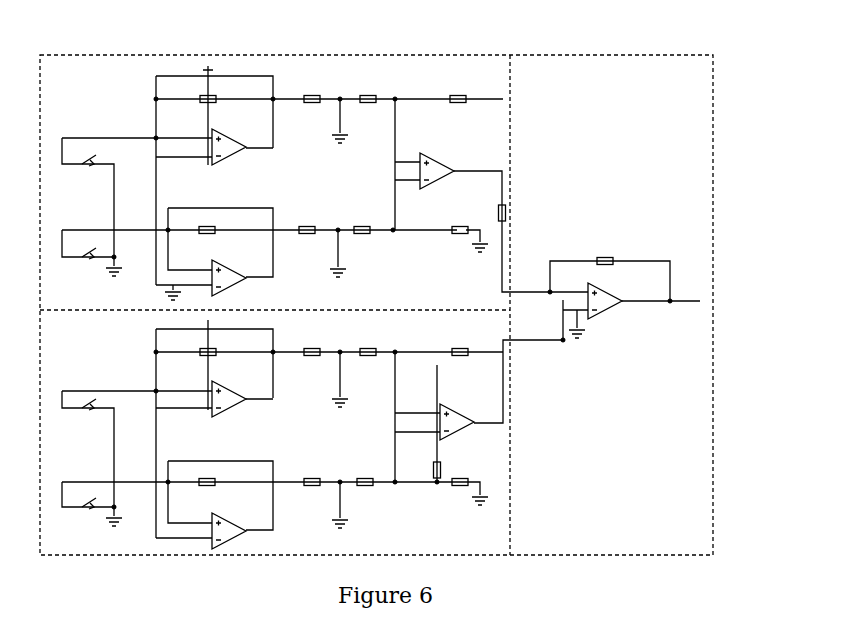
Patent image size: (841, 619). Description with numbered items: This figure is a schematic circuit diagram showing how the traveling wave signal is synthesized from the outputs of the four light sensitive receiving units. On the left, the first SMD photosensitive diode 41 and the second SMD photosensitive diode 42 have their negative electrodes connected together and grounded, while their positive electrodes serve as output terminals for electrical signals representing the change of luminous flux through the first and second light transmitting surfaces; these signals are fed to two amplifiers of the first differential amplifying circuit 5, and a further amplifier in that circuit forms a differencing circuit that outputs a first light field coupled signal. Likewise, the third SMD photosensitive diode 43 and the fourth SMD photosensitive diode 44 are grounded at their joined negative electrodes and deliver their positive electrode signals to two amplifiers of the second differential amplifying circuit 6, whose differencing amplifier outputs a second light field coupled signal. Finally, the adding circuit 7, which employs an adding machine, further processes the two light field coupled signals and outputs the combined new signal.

The first differential amplifying circuit 5 is at (321, 178).
The second differential amplifying circuit 6 is at (322, 424).
The adding circuit 7 is at (609, 228).
The first SMD photosensitive diode 41 is at (93, 172).
The second SMD photosensitive diode 42 is at (92, 262).
The third SMD photosensitive diode 43 is at (93, 412).
The fourth SMD photosensitive diode 44 is at (90, 515).